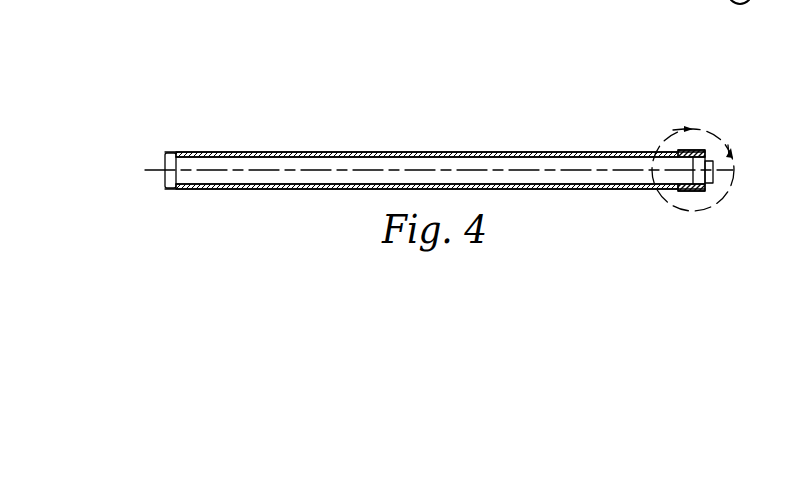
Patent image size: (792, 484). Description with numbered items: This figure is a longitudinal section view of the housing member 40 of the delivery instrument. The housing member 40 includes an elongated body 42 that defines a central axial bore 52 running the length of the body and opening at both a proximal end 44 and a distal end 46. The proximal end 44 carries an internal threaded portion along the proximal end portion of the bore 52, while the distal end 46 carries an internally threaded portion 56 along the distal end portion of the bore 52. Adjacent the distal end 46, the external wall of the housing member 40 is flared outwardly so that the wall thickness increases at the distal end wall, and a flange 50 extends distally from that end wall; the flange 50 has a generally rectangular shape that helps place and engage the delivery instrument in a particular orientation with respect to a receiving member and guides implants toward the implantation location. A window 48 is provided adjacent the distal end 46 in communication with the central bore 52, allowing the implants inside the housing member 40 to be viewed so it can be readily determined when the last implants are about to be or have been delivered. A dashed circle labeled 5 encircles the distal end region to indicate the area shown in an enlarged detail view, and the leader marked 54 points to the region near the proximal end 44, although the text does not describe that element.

The housing member 40 is at (456, 165).
The elongated body 42 is at (370, 152).
The proximal end 44 is at (170, 152).
The distal end 46 is at (697, 182).
The window 48 is at (628, 190).
The flange 50 is at (735, 168).
The central axial bore 52 is at (267, 161).
The plug bore 54 is at (178, 172).
The internally threaded portion 56 is at (681, 152).
The detail view indicator FIG. 5 is at (693, 165).